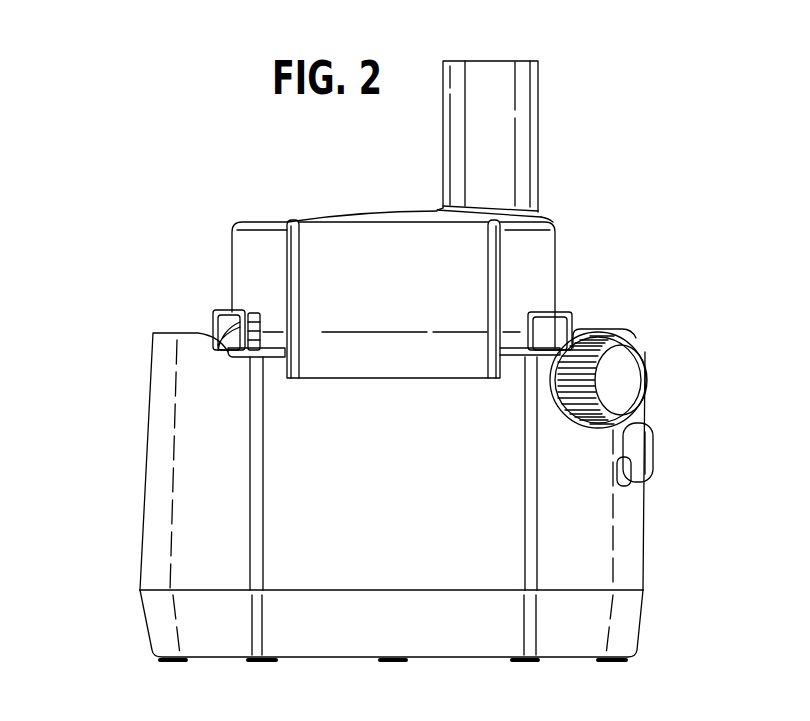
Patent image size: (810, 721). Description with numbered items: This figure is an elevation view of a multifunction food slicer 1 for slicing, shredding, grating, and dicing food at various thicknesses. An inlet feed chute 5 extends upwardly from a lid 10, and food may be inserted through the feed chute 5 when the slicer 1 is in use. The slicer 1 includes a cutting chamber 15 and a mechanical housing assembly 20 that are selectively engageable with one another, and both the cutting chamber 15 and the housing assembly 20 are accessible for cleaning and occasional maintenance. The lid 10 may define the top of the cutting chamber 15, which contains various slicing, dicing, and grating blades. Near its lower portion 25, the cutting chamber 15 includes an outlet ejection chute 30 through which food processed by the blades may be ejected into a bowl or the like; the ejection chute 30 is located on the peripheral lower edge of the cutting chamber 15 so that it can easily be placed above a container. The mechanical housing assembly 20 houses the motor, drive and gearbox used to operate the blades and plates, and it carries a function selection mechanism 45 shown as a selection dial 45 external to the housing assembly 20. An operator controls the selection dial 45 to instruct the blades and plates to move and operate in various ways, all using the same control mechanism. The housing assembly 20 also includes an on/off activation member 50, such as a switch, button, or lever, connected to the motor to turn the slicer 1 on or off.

The multifunction food slicer 1 is at (621, 217).
The inlet feed chute 5 is at (520, 97).
The lid 10 is at (262, 214).
The cutting chamber 15 is at (224, 280).
The mechanical housing assembly 20 is at (134, 559).
The lower portion 25 is at (281, 370).
The outlet ejection chute 30 is at (323, 378).
The function selection mechanism 45 is at (628, 378).
The on/off activation member 50 is at (645, 456).